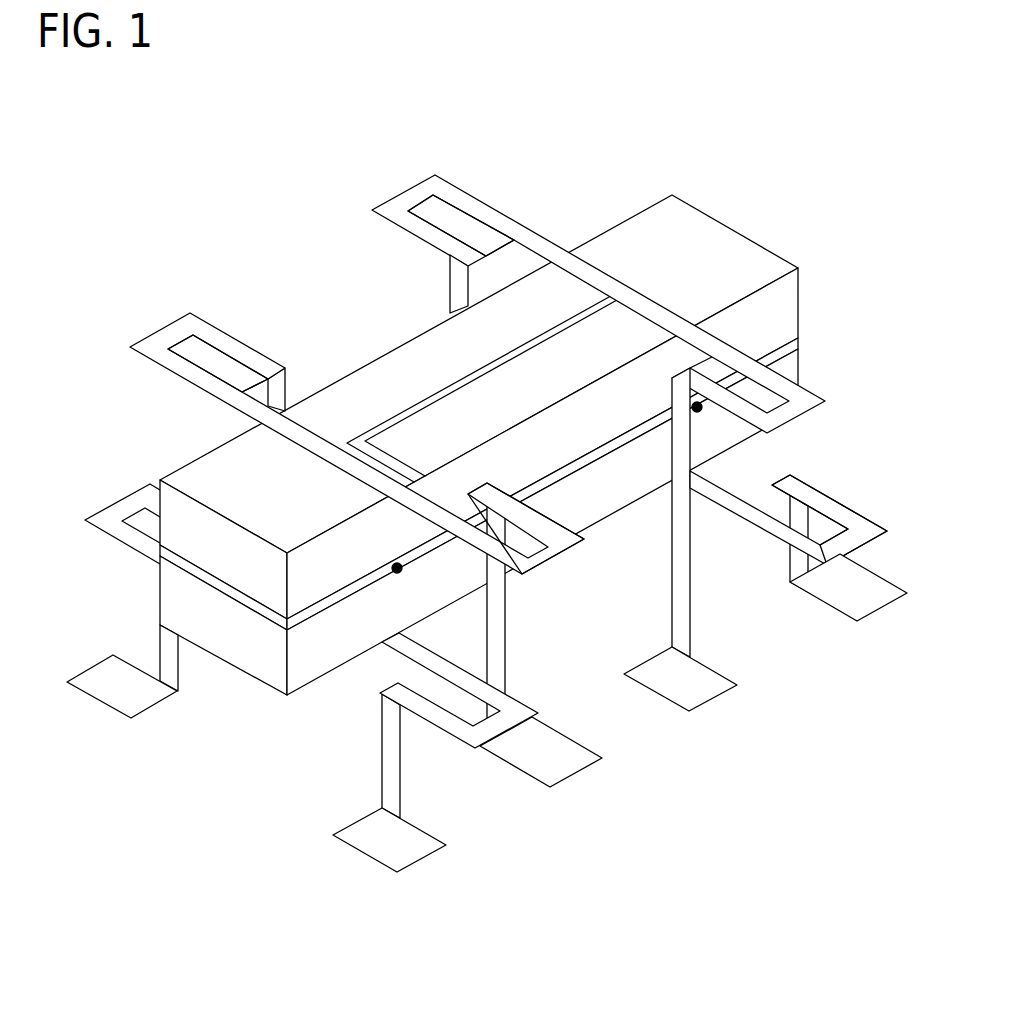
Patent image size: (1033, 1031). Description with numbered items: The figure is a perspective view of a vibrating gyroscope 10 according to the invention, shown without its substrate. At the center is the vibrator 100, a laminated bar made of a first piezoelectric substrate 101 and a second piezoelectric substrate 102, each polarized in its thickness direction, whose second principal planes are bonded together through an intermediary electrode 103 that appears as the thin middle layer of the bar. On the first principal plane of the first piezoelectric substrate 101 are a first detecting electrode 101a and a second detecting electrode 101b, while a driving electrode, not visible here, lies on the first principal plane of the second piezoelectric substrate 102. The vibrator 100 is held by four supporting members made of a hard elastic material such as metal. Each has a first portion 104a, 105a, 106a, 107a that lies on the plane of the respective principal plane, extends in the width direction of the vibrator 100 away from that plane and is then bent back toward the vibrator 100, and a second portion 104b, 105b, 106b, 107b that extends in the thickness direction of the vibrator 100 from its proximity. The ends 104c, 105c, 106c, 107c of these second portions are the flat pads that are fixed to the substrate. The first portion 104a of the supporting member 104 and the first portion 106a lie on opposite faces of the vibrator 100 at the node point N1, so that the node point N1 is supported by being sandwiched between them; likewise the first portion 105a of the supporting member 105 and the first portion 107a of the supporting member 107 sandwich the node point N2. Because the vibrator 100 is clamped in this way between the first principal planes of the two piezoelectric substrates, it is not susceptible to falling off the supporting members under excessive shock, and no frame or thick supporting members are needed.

The vibrating gyroscope 10 is at (141, 217).
The vibrator 100 is at (526, 402).
The first piezoelectric substrate 101 is at (526, 373).
The first detecting electrode 101a is at (400, 386).
The second detecting electrode 101b is at (470, 415).
The second piezoelectric substrate 102 is at (798, 373).
The intermediary electrode 103 is at (798, 342).
The supporting member 104 is at (394, 520).
The first portion 104a is at (172, 335).
The second portion 104b is at (287, 388).
The end 104c is at (558, 772).
The supporting member 105 is at (598, 416).
The first portion 105a is at (450, 192).
The second portion 105b is at (460, 303).
The end 105c is at (703, 698).
The first portion 106a is at (92, 518).
The second portion 106b is at (167, 656).
The end 106c is at (100, 686).
The supporting member 107 is at (798, 547).
The first portion 107a is at (823, 508).
The second portion 107b is at (790, 558).
The end 107c is at (865, 608).
The node point N1 is at (397, 572).
The node point N2 is at (695, 407).